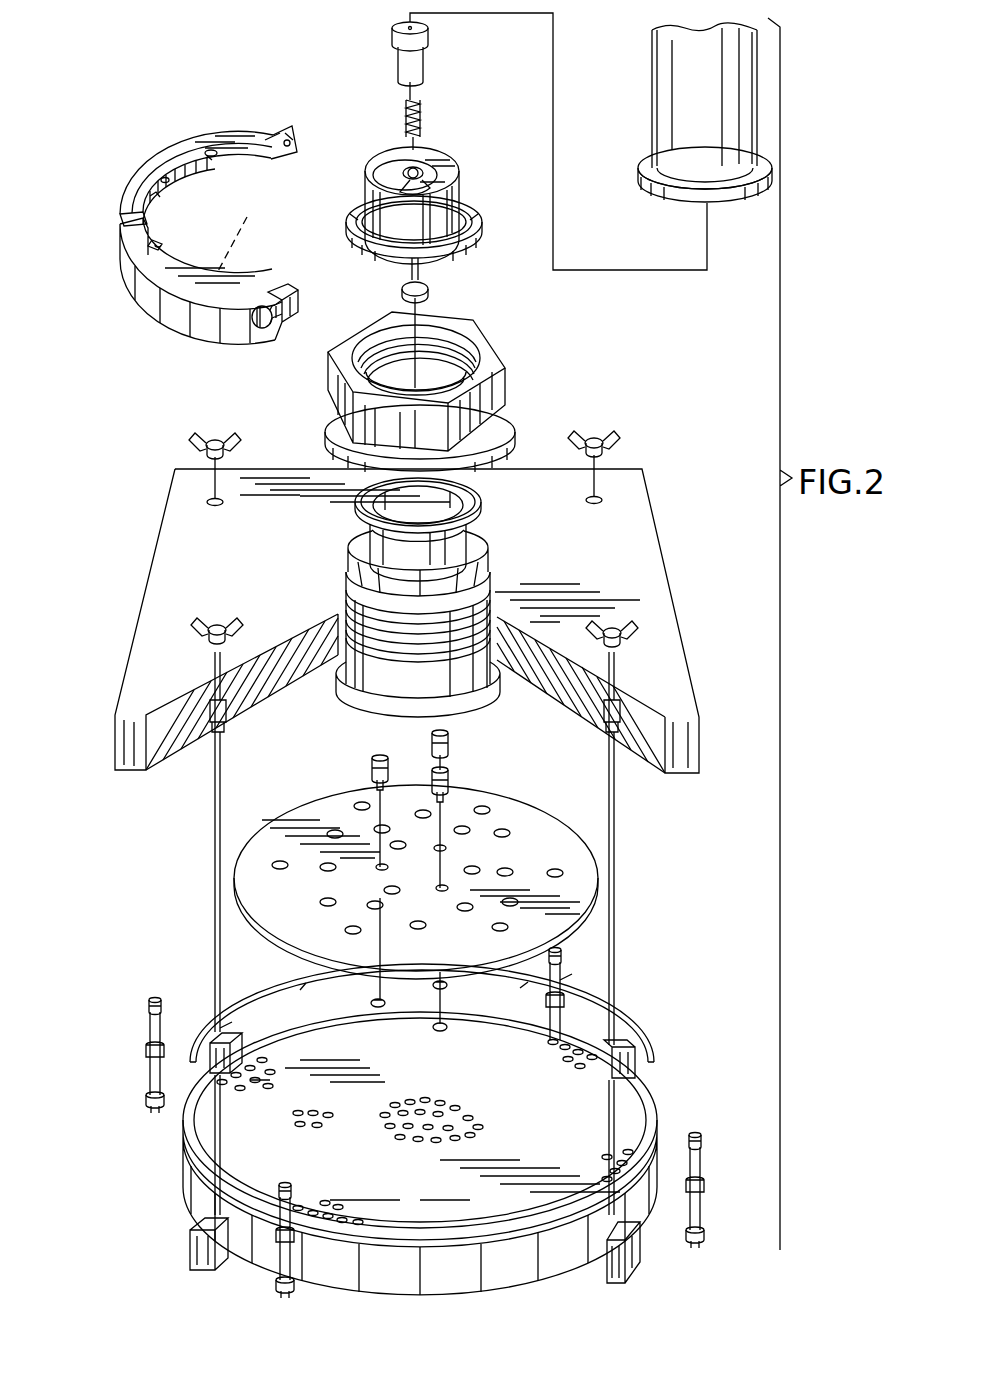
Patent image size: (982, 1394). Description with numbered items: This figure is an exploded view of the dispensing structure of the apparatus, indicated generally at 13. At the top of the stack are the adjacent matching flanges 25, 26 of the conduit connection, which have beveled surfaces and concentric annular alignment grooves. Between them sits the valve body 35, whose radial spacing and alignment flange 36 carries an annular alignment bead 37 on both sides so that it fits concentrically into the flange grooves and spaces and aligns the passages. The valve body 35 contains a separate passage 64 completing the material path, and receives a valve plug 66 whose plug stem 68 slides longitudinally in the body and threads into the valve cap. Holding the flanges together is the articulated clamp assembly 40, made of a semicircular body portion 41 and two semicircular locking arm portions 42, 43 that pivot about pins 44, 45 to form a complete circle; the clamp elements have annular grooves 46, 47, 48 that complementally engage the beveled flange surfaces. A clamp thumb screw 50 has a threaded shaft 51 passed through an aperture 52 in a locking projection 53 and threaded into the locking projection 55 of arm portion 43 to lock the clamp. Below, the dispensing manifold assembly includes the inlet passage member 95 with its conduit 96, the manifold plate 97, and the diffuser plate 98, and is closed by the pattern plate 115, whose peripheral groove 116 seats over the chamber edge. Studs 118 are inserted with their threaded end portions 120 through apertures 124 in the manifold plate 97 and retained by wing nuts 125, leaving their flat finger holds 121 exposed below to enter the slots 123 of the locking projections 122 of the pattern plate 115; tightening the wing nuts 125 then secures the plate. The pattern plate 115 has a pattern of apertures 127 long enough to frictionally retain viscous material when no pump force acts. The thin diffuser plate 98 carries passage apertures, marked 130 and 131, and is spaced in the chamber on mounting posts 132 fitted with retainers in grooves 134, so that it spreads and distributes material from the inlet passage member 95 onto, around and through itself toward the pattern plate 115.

The filter assembly 13 is at (186, 816).
The flange 25 is at (657, 190).
The flange 26 is at (483, 515).
The valve body 35 is at (443, 162).
The radial spacing and alignment flange 36 is at (480, 222).
The annular alignment bead 37 is at (468, 208).
The articulated clamp assembly 40 is at (112, 187).
The semicircular body portion 41 is at (127, 220).
The semicircular locking arm portion 42 is at (203, 295).
The semicircular locking arm portion 43 is at (232, 135).
The pin 44 is at (150, 247).
The pin 45 is at (165, 178).
The annular groove 46 is at (153, 197).
The annular groove 47 is at (247, 235).
The annular groove 48 is at (237, 157).
The clamp thumb screw 50 is at (262, 325).
The threaded shaft 51 is at (296, 308).
The aperture 52 is at (292, 143).
The locking projection 53 is at (288, 286).
The locking projection 55 is at (263, 137).
The separate passage 64 is at (405, 165).
The valve plug 66 is at (428, 291).
The plug stem 68 is at (420, 272).
The inlet passage member 95 is at (383, 667).
The conduit 96 is at (483, 493).
The manifold plate 97 is at (647, 567).
The diffuser plate 98 is at (283, 835).
The pattern plate 115 is at (622, 1102).
The peripheral groove 116 is at (653, 1123).
The stud 118 is at (150, 1068).
The threaded end portion 120 is at (148, 1002).
The axially extending flat finger hold 121 is at (150, 1108).
The locking projection 122 is at (233, 1026).
The slot 123 is at (243, 1035).
The aperture 124 is at (212, 680).
The wing nut 125 is at (227, 622).
The aperture 127 is at (457, 1113).
The holes 130 is at (505, 870).
The material passage apertures 131 is at (382, 867).
The mounting post 132 is at (448, 743).
The groove 134 is at (373, 782).